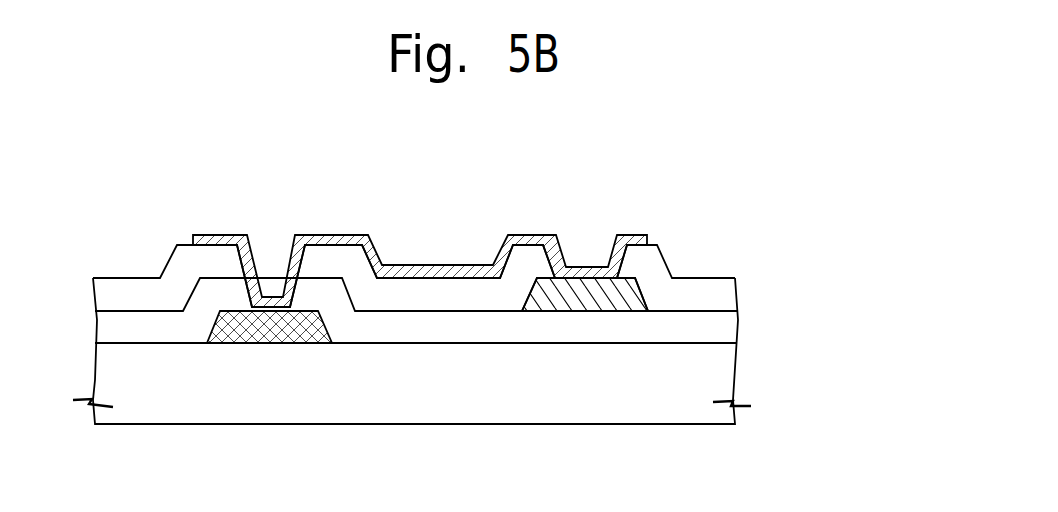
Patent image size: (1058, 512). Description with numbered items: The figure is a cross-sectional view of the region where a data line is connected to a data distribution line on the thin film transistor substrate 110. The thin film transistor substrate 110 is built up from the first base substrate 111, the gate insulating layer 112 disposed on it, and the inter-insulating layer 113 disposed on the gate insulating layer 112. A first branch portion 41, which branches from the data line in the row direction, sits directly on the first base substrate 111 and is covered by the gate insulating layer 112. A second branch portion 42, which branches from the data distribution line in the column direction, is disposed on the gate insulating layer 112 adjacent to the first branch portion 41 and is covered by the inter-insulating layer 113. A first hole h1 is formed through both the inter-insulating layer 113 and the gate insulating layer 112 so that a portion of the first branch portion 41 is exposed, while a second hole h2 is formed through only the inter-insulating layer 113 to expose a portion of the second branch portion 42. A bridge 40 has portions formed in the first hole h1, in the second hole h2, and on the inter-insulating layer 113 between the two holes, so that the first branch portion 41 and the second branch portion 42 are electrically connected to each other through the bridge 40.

The bridge 40 is at (537, 233).
The first branch portion 41 is at (275, 325).
The second branch portion 42 is at (600, 300).
The thin film transistor substrate 110 is at (472, 334).
The first base substrate 111 is at (718, 377).
The gate insulating layer 112 is at (728, 322).
The inter-insulating layer 113 is at (452, 276).
The first hole h1 is at (268, 240).
The second hole h2 is at (593, 240).